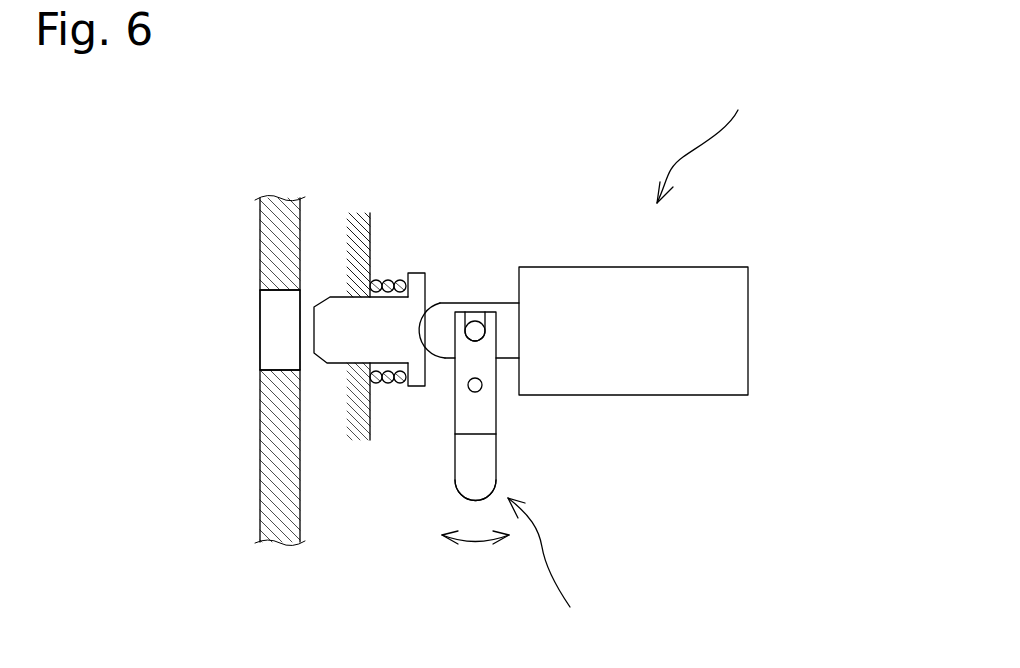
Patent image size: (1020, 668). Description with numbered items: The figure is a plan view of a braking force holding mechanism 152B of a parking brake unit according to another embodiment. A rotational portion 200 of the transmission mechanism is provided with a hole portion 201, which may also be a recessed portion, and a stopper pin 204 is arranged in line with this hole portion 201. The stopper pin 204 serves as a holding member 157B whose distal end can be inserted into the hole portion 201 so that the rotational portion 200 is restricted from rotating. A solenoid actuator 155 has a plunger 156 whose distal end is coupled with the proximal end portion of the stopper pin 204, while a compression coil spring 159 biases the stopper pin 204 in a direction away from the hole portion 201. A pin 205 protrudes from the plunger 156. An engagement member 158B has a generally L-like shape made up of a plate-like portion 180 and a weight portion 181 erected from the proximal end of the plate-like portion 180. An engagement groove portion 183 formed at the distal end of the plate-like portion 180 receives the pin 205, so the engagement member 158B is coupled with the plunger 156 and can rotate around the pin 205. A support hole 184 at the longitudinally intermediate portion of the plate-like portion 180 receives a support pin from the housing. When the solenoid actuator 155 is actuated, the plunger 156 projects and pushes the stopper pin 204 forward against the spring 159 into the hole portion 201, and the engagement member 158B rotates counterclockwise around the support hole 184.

The braking force holding mechanism 152B is at (712, 140).
The solenoid actuator 155 is at (725, 331).
The plunger 156 is at (442, 320).
The holding member 157B is at (338, 313).
The engagement member 158B is at (521, 570).
The compression coil spring 159 is at (388, 281).
The plate-like portion 180 is at (482, 413).
The weight portion 181 is at (463, 482).
The engagement groove portion 183 is at (478, 311).
The support hole 184 is at (481, 379).
The rotational portion 200 is at (277, 450).
The hole portion 201 is at (277, 290).
The stopper pin 204 is at (372, 287).
The pin 205 is at (477, 332).